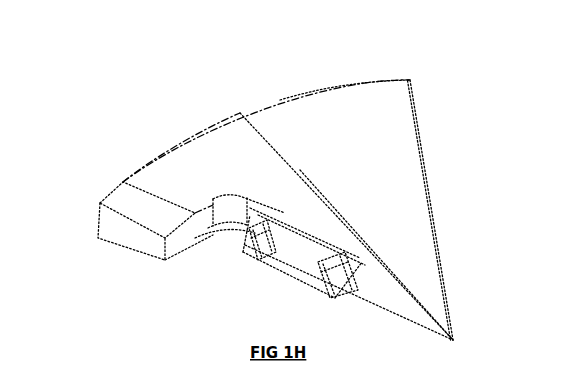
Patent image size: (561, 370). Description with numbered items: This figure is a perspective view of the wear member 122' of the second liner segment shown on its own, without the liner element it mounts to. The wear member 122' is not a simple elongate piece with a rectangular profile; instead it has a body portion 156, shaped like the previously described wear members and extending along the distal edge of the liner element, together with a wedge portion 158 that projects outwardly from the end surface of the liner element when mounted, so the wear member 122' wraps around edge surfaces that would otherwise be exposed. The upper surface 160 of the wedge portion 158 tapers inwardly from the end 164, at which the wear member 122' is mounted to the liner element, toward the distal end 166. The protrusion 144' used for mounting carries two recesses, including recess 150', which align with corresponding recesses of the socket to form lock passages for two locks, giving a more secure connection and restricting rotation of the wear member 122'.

The wear member 122' is at (281, 195).
The body portion 156 is at (175, 177).
The wedge portion 158 is at (377, 113).
The distal end 166 is at (421, 147).
The upper surface 160 is at (415, 253).
The end 164 is at (233, 215).
The recess 150' is at (360, 267).
The protrusion 144' is at (316, 286).